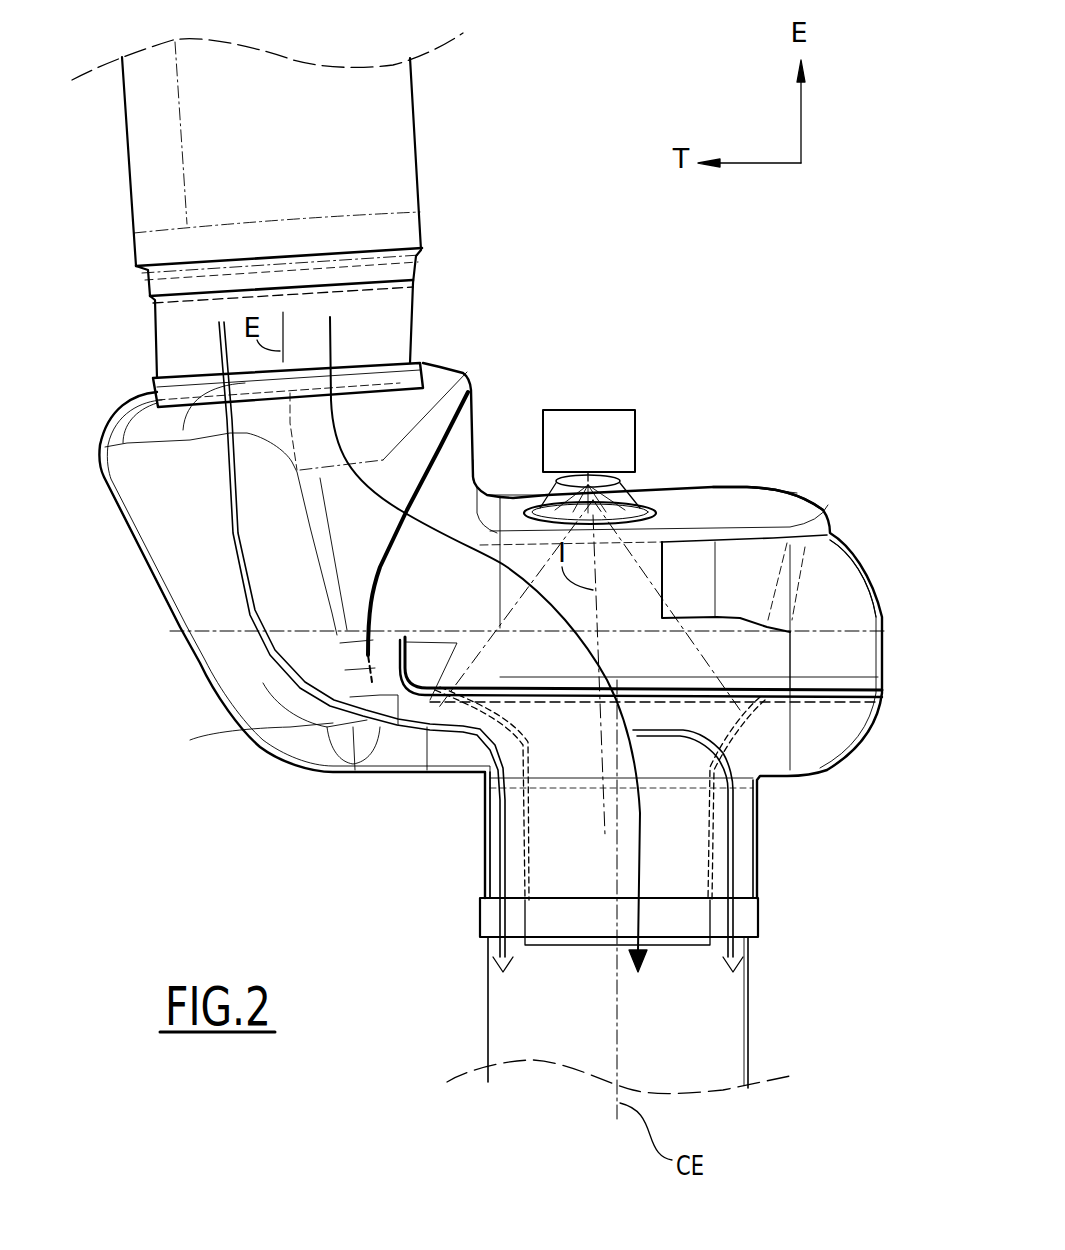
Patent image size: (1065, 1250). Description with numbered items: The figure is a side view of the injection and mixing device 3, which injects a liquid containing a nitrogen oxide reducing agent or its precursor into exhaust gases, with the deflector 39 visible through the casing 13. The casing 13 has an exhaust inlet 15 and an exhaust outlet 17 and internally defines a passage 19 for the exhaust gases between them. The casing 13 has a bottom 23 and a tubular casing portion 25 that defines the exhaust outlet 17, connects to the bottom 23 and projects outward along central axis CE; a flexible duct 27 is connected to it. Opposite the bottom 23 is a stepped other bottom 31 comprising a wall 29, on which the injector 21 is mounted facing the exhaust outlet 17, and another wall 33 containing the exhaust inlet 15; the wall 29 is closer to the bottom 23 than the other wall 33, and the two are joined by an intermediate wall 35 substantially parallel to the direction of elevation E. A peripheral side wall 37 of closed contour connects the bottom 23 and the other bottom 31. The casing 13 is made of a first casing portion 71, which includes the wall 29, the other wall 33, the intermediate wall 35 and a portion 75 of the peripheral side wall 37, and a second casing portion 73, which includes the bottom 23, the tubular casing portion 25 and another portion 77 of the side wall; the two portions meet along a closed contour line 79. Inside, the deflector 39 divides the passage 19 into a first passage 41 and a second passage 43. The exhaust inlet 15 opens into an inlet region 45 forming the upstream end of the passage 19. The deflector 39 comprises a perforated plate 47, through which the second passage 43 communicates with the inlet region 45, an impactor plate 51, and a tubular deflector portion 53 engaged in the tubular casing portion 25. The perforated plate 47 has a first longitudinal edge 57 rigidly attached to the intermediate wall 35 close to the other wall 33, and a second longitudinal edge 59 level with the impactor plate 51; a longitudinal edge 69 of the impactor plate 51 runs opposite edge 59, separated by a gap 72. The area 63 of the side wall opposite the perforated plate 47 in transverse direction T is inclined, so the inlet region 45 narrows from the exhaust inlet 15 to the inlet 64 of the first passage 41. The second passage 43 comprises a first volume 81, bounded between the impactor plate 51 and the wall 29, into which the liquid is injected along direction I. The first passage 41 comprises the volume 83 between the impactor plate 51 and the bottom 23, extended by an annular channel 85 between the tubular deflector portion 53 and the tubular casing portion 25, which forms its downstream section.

The injection and mixing device 3 is at (813, 360).
The casing 13 is at (900, 600).
The exhaust inlet 15 is at (350, 370).
The exhaust outlet 17 is at (748, 938).
The passage 19 is at (200, 713).
The injector 21 is at (637, 420).
The bottom 23 is at (357, 770).
The tubular casing portion 25 is at (753, 878).
The flexible duct 27 is at (500, 1020).
The wall 29 is at (753, 485).
The other bottom 31 is at (507, 463).
The other wall 33 is at (427, 360).
The intermediate wall 35 is at (480, 427).
The peripheral side wall 37 is at (840, 673).
The deflector 39 is at (367, 540).
The first passage 41 is at (283, 770).
The second passage 43 is at (773, 590).
The inlet region 45 is at (280, 500).
The perforated plate 47 is at (425, 467).
The impactor plate 51 is at (802, 673).
The tubular deflector portion 53 is at (710, 843).
The first longitudinal edge 57 is at (483, 403).
The second longitudinal edge 59 is at (340, 628).
The area of the side peripheral wall 63 is at (127, 528).
The inlet of the first passage 64 is at (277, 707).
The longitudinal edge 69 is at (417, 657).
The first casing portion 71 is at (83, 407).
The gap 72 is at (387, 650).
The second casing portion 73 is at (323, 767).
The portion of the peripheral side wall 75 is at (835, 590).
The another portion of the peripheral side wall 77 is at (813, 737).
The closed contour line 79 is at (200, 647).
The first volume 81 is at (730, 547).
The volume 83 is at (435, 753).
The annular channel 85 is at (498, 860).